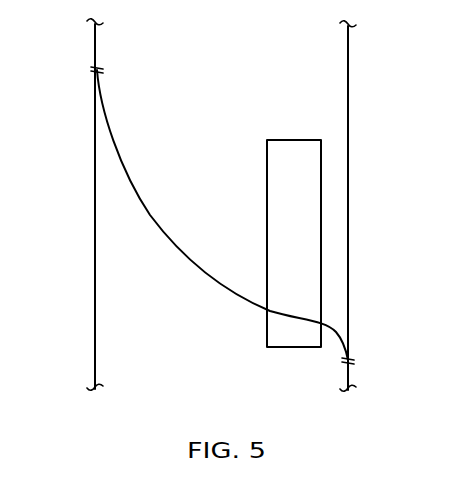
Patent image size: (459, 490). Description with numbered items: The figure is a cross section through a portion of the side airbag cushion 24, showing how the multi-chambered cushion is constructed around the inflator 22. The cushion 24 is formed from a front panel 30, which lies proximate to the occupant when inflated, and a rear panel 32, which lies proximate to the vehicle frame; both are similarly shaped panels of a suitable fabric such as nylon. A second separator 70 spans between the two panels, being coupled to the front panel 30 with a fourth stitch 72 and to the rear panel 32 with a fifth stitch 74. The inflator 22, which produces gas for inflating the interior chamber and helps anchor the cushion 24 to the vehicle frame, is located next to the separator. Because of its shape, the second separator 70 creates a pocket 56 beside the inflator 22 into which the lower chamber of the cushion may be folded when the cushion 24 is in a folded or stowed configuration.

The inflator 22 is at (280, 147).
The side airbag cushion 24 is at (370, 108).
The front panel 30 is at (95, 262).
The rear panel 32 is at (349, 216).
The pocket 56 is at (132, 250).
The second separator 70 is at (185, 258).
The fourth stitch 72 is at (100, 68).
The fifth stitch 74 is at (352, 361).